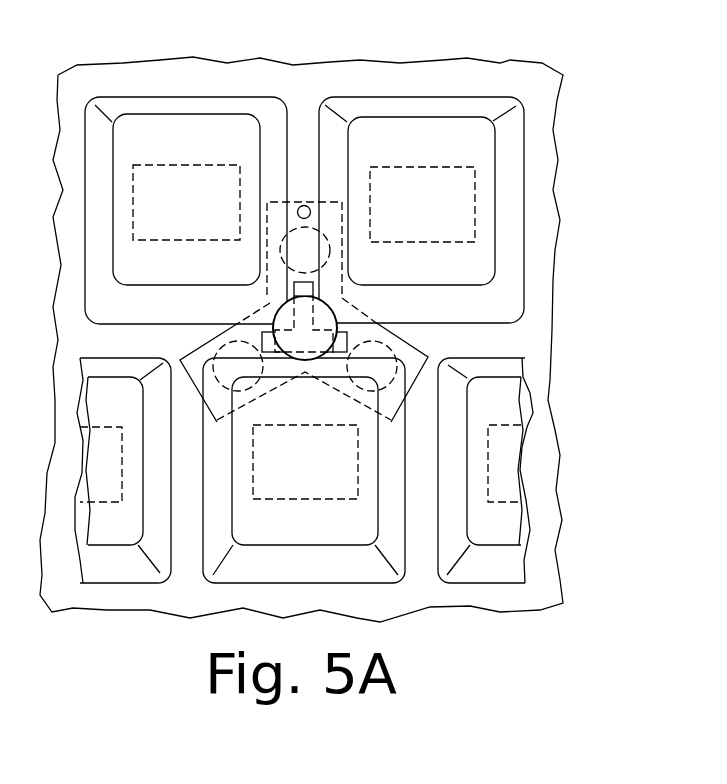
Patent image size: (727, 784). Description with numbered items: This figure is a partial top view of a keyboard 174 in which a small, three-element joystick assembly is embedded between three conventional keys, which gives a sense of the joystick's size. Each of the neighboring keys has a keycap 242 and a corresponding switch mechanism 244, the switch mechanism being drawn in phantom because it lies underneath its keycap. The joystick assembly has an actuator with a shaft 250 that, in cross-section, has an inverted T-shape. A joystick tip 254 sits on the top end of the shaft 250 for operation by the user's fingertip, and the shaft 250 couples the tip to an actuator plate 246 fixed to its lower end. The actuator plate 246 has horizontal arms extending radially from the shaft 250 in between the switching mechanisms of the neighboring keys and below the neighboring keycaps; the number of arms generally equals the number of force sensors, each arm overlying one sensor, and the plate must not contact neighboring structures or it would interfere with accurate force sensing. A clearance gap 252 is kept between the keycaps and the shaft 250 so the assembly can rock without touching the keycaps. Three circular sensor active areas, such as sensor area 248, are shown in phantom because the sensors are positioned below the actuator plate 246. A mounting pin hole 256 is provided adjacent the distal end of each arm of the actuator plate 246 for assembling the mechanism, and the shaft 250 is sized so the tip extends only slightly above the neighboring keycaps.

The substrate / circuit board 174 is at (528, 335).
The keycap 242 is at (378, 98).
The switch mechanism 244 is at (467, 167).
The actuator plate 246 is at (405, 340).
The sensor area 248 is at (330, 238).
The shaft 250 is at (314, 289).
The clearance gap 252 is at (270, 352).
The joystick tip 254 is at (273, 308).
The mounting pin hole 256 is at (297, 212).